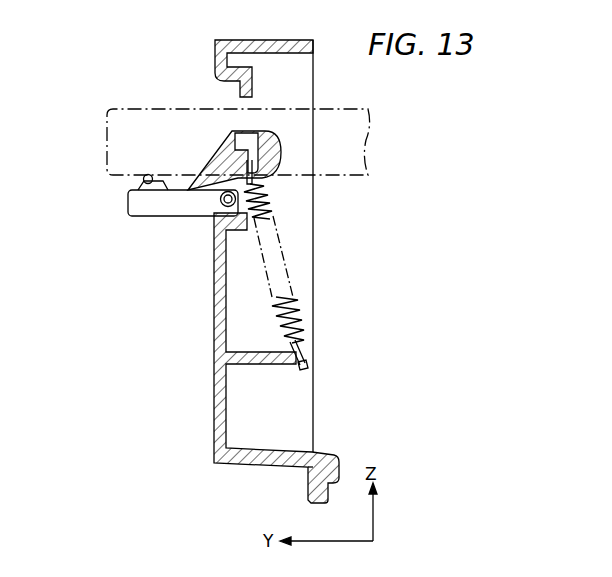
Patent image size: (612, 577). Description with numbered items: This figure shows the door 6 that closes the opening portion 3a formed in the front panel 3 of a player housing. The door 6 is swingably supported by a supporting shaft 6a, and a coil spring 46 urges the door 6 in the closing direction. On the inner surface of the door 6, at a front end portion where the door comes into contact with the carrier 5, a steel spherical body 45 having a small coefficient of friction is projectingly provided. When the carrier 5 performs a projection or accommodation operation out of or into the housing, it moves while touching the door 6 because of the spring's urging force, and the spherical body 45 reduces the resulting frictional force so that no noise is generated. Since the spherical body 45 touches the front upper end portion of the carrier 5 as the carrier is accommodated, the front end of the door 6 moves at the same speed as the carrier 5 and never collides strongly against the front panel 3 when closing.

The front panel 3 is at (213, 456).
The opening portion 3a is at (244, 107).
The carrier 5 is at (104, 110).
The door 6 is at (138, 203).
The supporting shaft 6a is at (221, 205).
The spherical body 45 is at (140, 178).
The coil spring 46 is at (280, 305).